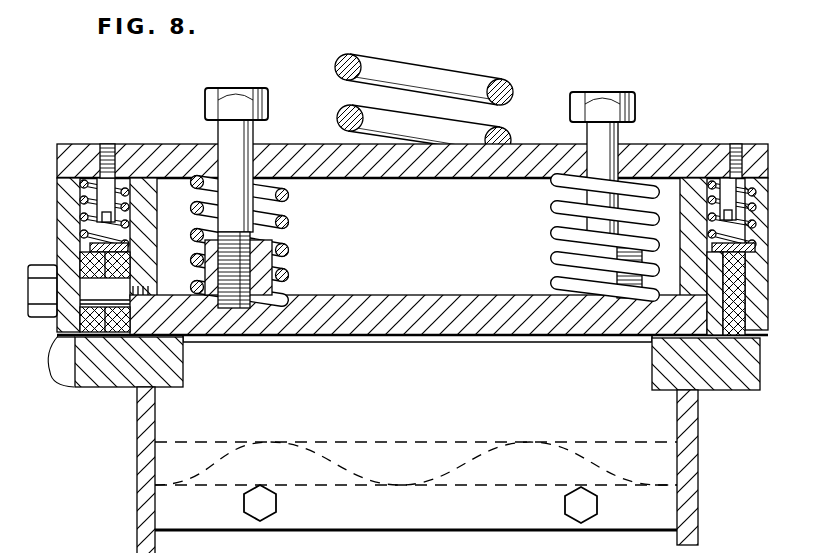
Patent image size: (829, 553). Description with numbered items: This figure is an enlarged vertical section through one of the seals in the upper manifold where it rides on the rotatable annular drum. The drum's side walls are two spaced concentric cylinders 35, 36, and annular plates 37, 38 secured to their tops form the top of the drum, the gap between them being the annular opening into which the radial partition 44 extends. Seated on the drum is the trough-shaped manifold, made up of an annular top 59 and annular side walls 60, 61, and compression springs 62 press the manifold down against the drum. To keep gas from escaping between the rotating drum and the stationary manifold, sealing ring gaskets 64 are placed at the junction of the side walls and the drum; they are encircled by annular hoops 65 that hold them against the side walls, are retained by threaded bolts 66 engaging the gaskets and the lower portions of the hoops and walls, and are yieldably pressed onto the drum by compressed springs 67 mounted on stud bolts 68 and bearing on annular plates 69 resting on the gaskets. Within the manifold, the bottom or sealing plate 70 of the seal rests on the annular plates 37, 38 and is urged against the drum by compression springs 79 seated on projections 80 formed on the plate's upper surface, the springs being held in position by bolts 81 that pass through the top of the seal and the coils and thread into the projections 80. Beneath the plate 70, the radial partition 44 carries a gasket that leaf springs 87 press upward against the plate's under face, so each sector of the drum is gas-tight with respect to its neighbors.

The concentric cylinder 35 is at (700, 510).
The concentric cylinder 36 is at (137, 500).
The annular plate 37 is at (729, 391).
The annular plate 38 is at (105, 388).
The radial partition 44 is at (166, 425).
The annular top of manifold 59 is at (680, 150).
The annular side wall of manifold 60 is at (683, 238).
The annular side wall of manifold 61 is at (150, 196).
The compression spring 62 is at (505, 86).
The sealing ring gasket 64 is at (76, 344).
The annular hoop 65 is at (62, 216).
The threaded bolt 66 is at (148, 248).
The compressed spring 67 is at (62, 195).
The stud bolt 68 is at (108, 166).
The annular plate 69 is at (90, 247).
The bottom or sealing plate 70 is at (410, 296).
The compression spring 79 is at (289, 197).
The projection 80 is at (290, 262).
The bolt 81 is at (252, 143).
The leaf spring 87 is at (307, 458).